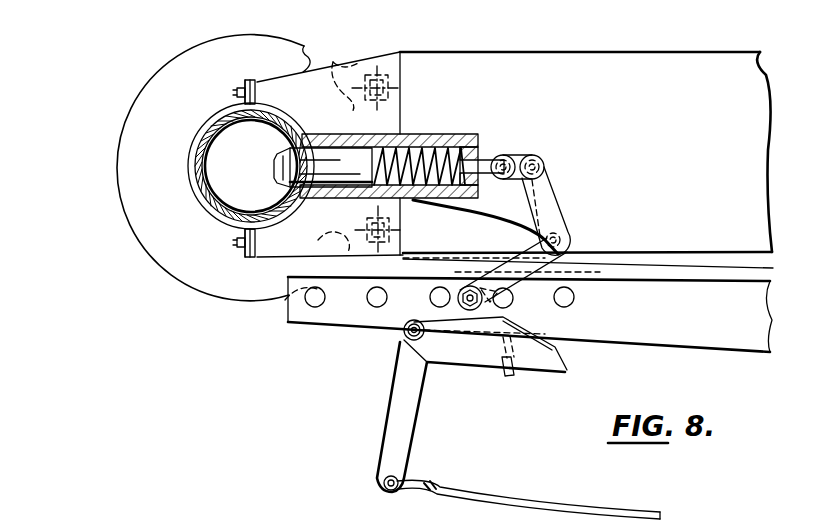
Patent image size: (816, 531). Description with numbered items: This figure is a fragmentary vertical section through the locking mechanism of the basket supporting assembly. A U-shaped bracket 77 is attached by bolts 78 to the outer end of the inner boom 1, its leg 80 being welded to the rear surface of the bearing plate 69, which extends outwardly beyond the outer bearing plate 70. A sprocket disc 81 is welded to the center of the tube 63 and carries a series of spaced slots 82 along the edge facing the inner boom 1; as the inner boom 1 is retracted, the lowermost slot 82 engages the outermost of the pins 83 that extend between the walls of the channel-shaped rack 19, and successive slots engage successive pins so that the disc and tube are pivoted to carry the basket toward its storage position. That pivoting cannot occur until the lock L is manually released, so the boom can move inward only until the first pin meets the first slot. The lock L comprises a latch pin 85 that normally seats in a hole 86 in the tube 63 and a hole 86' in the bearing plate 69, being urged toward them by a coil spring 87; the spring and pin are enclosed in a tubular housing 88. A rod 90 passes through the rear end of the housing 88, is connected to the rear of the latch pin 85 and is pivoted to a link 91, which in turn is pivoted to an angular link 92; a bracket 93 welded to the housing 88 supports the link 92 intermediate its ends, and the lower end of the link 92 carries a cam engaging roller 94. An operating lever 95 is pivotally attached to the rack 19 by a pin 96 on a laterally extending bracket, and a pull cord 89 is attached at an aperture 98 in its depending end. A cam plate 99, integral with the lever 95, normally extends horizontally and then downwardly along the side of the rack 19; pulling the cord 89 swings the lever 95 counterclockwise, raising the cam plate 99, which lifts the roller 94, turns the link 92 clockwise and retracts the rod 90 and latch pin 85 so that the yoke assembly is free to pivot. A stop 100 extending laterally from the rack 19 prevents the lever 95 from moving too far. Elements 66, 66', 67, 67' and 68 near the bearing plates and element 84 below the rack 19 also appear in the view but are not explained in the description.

The inner boom 1 is at (538, 53).
The rack 19 is at (300, 326).
The tube 63 is at (222, 124).
The clamp bolt 66 is at (322, 74).
The clamp bolt 66' is at (229, 74).
The clamp bolt 67 is at (324, 254).
The clamp bolt 67' is at (228, 254).
The nut 68 is at (236, 92).
The bearing plate 69 is at (284, 120).
The outer bearing plate 70 is at (190, 150).
The U-shaped bracket 77 is at (397, 60).
The bolts 78 is at (368, 62).
The leg 80 is at (329, 62).
The sprocket disc 81 is at (119, 138).
The slots 82 is at (276, 287).
The pins 83 is at (320, 300).
The plate 84 is at (698, 285).
The latch pin 85 is at (276, 178).
The hole 86 is at (357, 198).
The hole 86' is at (390, 127).
The coil spring 87 is at (463, 165).
The tubular housing 88 is at (484, 167).
The pull cord 89 is at (620, 510).
The rod 90 is at (516, 156).
The link 91 is at (546, 163).
The angular link 92 is at (552, 198).
The bracket 93 is at (487, 210).
The cam engaging roller 94 is at (453, 288).
The operating lever 95 is at (406, 432).
The pin 96 is at (404, 336).
The aperture 98 is at (384, 488).
The cam plate 99 is at (533, 332).
The stop 100 is at (512, 376).
The lock L is at (438, 138).